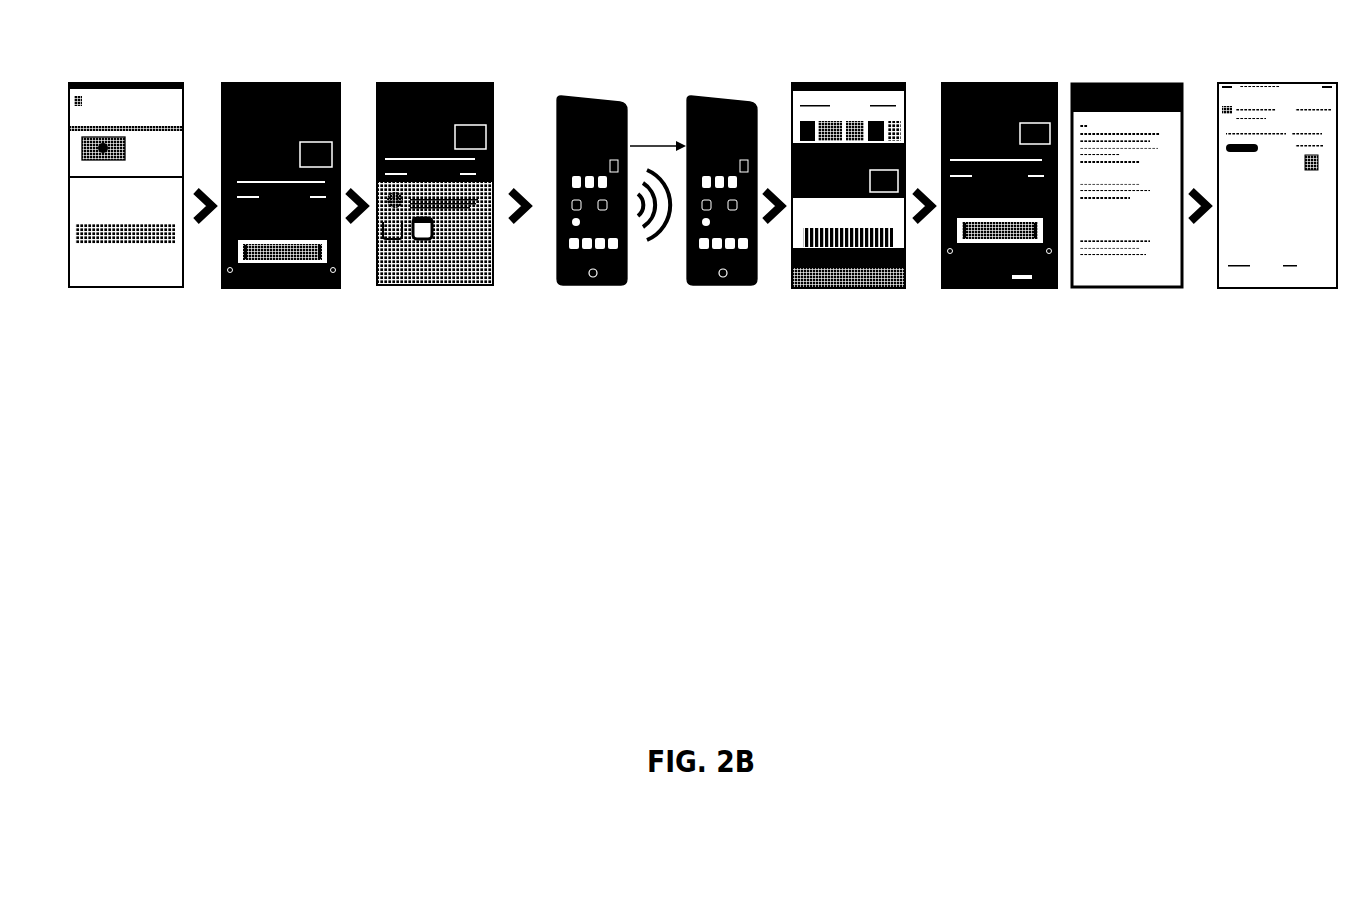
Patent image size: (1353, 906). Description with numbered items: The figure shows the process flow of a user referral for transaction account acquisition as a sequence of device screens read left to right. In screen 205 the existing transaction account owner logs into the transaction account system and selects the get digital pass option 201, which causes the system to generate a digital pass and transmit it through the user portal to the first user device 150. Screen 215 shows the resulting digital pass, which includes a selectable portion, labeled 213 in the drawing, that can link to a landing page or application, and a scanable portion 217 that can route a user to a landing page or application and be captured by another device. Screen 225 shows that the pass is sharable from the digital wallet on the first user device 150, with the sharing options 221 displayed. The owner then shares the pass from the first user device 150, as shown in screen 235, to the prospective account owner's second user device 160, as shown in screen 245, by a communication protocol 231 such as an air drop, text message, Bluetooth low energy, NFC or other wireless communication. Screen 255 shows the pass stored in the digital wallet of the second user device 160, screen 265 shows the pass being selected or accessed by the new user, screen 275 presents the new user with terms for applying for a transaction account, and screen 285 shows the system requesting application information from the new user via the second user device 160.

The screen 205 is at (126, 209).
The get digital pass option 201 is at (107, 242).
The screen 215 is at (280, 240).
The pass sharing prompt 213 is at (222, 198).
The scanable portion 217 is at (280, 258).
The screen 225 is at (436, 208).
The sharing options sheet 221 is at (493, 237).
The screen 235 is at (590, 208).
The first user device 150 is at (556, 235).
The communication protocol 231 is at (658, 179).
The screen 245 is at (720, 208).
The second user device 160 is at (686, 235).
The screen 255 is at (848, 206).
The screen 265 is at (999, 168).
The screen 275 is at (1127, 167).
The screen 285 is at (1277, 168).